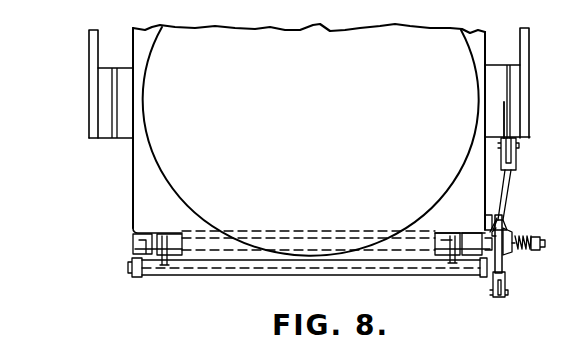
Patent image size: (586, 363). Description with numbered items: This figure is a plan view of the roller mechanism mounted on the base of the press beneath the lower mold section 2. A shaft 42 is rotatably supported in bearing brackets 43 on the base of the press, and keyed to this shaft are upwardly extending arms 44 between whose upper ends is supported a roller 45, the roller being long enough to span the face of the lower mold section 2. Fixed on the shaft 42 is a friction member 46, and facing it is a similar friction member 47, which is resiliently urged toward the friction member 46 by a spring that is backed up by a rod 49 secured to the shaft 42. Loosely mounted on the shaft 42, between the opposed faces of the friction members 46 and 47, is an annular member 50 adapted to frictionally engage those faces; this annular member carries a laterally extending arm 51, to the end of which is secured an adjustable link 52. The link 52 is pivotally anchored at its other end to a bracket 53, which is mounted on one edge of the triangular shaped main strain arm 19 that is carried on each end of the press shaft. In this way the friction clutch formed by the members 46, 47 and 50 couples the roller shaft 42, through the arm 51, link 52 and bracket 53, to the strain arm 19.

The lower mold section 2 is at (309, 140).
The main strain arm 19 is at (93, 80).
The shaft 42 is at (196, 243).
The bearing brackets 43 is at (137, 238).
The arms 44 is at (160, 251).
The roller 45 is at (240, 268).
The friction member 46 is at (484, 218).
The friction member 47 is at (511, 251).
The rod 49 is at (535, 240).
The annular member 50 is at (505, 213).
The arm 51 is at (500, 298).
The adjustable link 52 is at (512, 190).
The bracket 53 is at (520, 147).